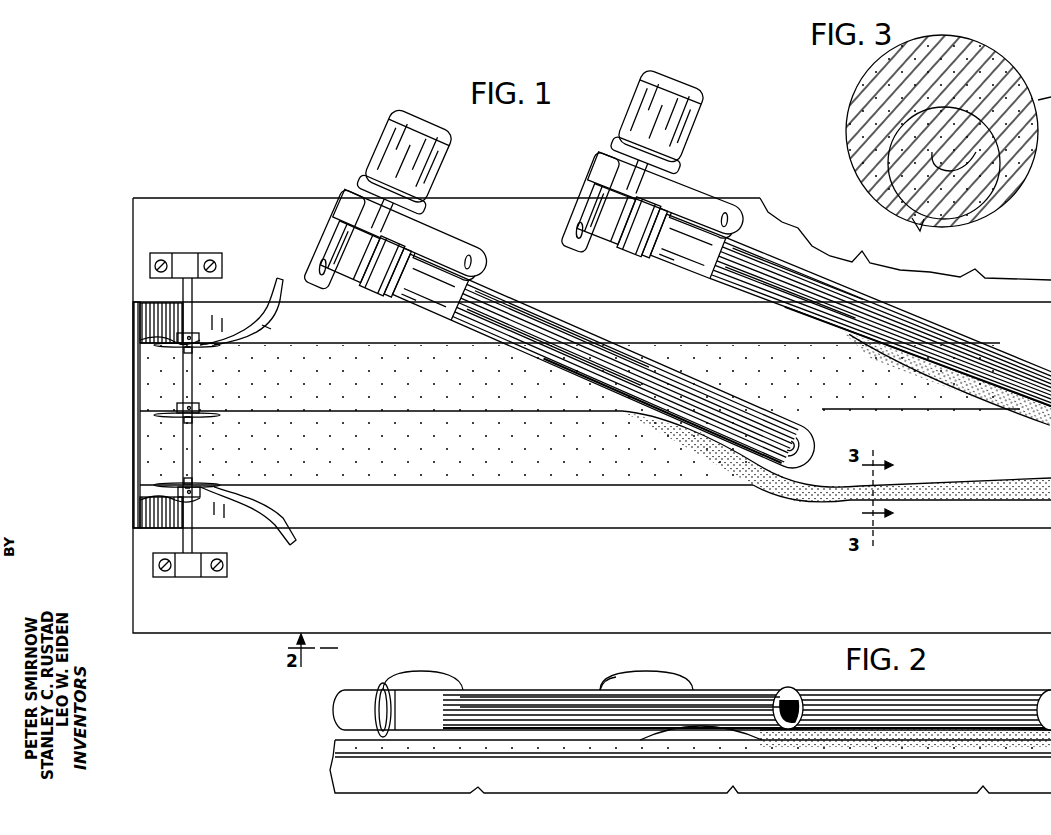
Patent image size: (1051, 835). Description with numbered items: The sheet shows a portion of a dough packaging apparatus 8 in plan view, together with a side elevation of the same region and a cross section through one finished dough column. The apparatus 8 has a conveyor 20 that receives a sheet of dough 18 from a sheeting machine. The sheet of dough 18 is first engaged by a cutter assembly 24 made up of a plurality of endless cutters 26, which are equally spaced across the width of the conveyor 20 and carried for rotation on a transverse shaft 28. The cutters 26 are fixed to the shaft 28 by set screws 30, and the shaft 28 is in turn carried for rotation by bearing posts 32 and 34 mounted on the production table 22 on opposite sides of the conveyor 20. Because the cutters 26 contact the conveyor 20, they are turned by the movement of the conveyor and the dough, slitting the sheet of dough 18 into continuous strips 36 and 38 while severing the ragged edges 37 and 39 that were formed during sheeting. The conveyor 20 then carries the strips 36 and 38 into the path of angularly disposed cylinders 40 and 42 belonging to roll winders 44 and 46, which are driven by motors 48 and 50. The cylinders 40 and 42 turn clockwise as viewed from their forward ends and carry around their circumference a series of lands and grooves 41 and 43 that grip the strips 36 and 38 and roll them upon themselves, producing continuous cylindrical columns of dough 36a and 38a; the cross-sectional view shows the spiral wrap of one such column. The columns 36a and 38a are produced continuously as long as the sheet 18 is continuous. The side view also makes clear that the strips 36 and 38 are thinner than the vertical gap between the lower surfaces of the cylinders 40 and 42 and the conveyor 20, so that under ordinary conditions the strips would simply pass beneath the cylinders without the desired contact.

In FIG. 1, the dough packaging apparatus 8 is at (253, 222).
In FIG. 1, the sheet of dough 18 is at (148, 371).
In FIG. 1, the conveyor 20 is at (630, 313).
In FIG. 2, the conveyor 20 is at (379, 757).
In FIG. 1, the production table 22 is at (615, 582).
In FIG. 2, the production table 22 is at (590, 784).
In FIG. 1, the cutter assembly 24 is at (192, 374).
In FIG. 1, the endless cutters 26 is at (212, 341).
In FIG. 1, the transverse shaft 28 is at (187, 461).
In FIG. 1, the set screws 30 is at (186, 345).
In FIG. 1, the bearing post 32 is at (193, 254).
In FIG. 1, the bearing post 34 is at (222, 577).
In FIG. 1, the continuous strip 36 is at (343, 361).
In FIG. 2, the continuous strip 36 is at (334, 745).
In FIG. 1, the cylindrical column of dough 36a is at (836, 457).
In FIG. 1, the ragged edge 37 is at (278, 297).
In FIG. 1, the continuous strip 38 is at (375, 487).
In FIG. 2, the continuous strip 38 is at (456, 746).
In FIG. 1, the cylindrical column of dough 38a is at (902, 505).
In FIG. 2, the cylindrical column of dough 38a is at (880, 747).
In FIG. 1, the ragged edge 39 is at (288, 546).
In FIG. 1, the cylinder 40 is at (572, 337).
In FIG. 2, the cylinder 40 is at (517, 690).
In FIG. 1, the lands and grooves 41 is at (498, 305).
In FIG. 2, the lands and grooves 41 is at (733, 700).
In FIG. 1, the cylinder 42 is at (992, 331).
In FIG. 2, the cylinder 42 is at (806, 690).
In FIG. 1, the lands and grooves 43 is at (538, 325).
In FIG. 2, the lands and grooves 43 is at (757, 700).
In FIG. 1, the roll winder 44 is at (460, 256).
In FIG. 2, the roll winder 44 is at (466, 690).
In FIG. 1, the roll winder 46 is at (705, 216).
In FIG. 2, the roll winder 46 is at (630, 680).
In FIG. 1, the motor 48 is at (463, 153).
In FIG. 2, the motor 48 is at (413, 680).
In FIG. 1, the motor 50 is at (706, 105).
In FIG. 2, the motor 50 is at (680, 685).